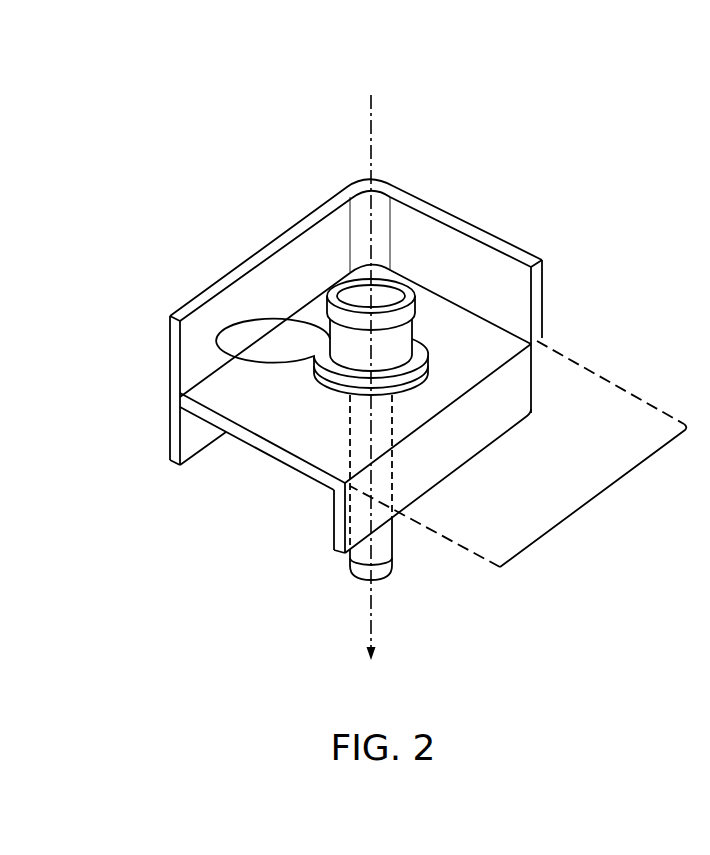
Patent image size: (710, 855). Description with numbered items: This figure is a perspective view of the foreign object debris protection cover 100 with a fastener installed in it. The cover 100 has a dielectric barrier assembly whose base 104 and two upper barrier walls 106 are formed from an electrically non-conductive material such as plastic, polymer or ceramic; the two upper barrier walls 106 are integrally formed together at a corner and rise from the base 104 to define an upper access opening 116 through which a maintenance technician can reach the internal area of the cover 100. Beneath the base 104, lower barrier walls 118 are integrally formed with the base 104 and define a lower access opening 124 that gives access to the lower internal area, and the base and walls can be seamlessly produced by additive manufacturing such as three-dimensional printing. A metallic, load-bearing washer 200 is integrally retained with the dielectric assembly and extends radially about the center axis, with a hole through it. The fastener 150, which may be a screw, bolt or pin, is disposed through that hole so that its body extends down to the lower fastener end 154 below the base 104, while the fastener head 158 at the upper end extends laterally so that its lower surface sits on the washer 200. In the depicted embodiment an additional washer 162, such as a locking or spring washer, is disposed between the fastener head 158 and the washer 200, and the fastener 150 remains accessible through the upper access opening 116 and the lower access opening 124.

The foreign object debris protection cover 100 is at (385, 381).
The base 104 is at (213, 398).
The upper barrier wall 106 is at (489, 206).
The upper access opening 116 is at (604, 494).
The lower barrier wall 118 is at (178, 470).
The lower access opening 124 is at (281, 497).
The fastener 150 is at (368, 412).
The lower fastener end 154 is at (393, 561).
The fastener head 158 is at (417, 353).
The additional washer 162 is at (415, 333).
The washer 200 is at (303, 353).